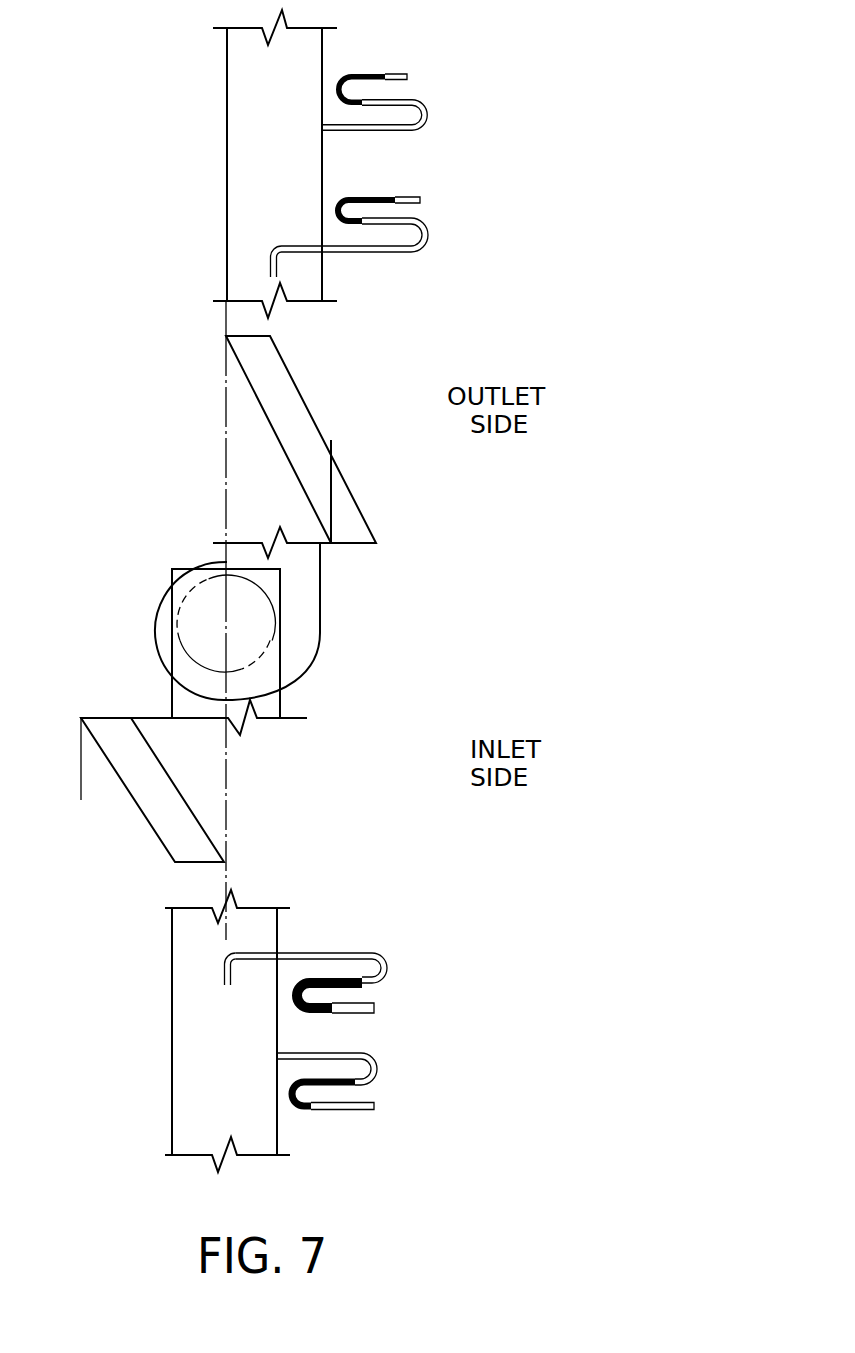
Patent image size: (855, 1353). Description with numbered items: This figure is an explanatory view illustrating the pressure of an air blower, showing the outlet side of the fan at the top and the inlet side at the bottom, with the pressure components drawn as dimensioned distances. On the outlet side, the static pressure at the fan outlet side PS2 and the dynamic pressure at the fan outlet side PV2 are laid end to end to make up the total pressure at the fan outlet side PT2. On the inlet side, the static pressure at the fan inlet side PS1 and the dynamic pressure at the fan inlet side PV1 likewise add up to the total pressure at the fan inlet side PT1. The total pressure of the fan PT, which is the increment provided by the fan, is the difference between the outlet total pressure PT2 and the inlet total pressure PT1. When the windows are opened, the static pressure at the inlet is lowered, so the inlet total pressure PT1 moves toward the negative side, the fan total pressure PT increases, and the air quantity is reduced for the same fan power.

The static pressure at the fan outlet side PS2 is at (385, 70).
The total pressure at the fan outlet side PT2 is at (397, 192).
The total pressure of the fan PT is at (376, 543).
The dynamic pressure at the fan outlet side PV2 is at (376, 447).
The dynamic pressure at the fan inlet side PV1 is at (131, 756).
The total pressure at the fan inlet side PT1 is at (226, 756).
The static pressure at the fan inlet side PS1 is at (354, 1130).